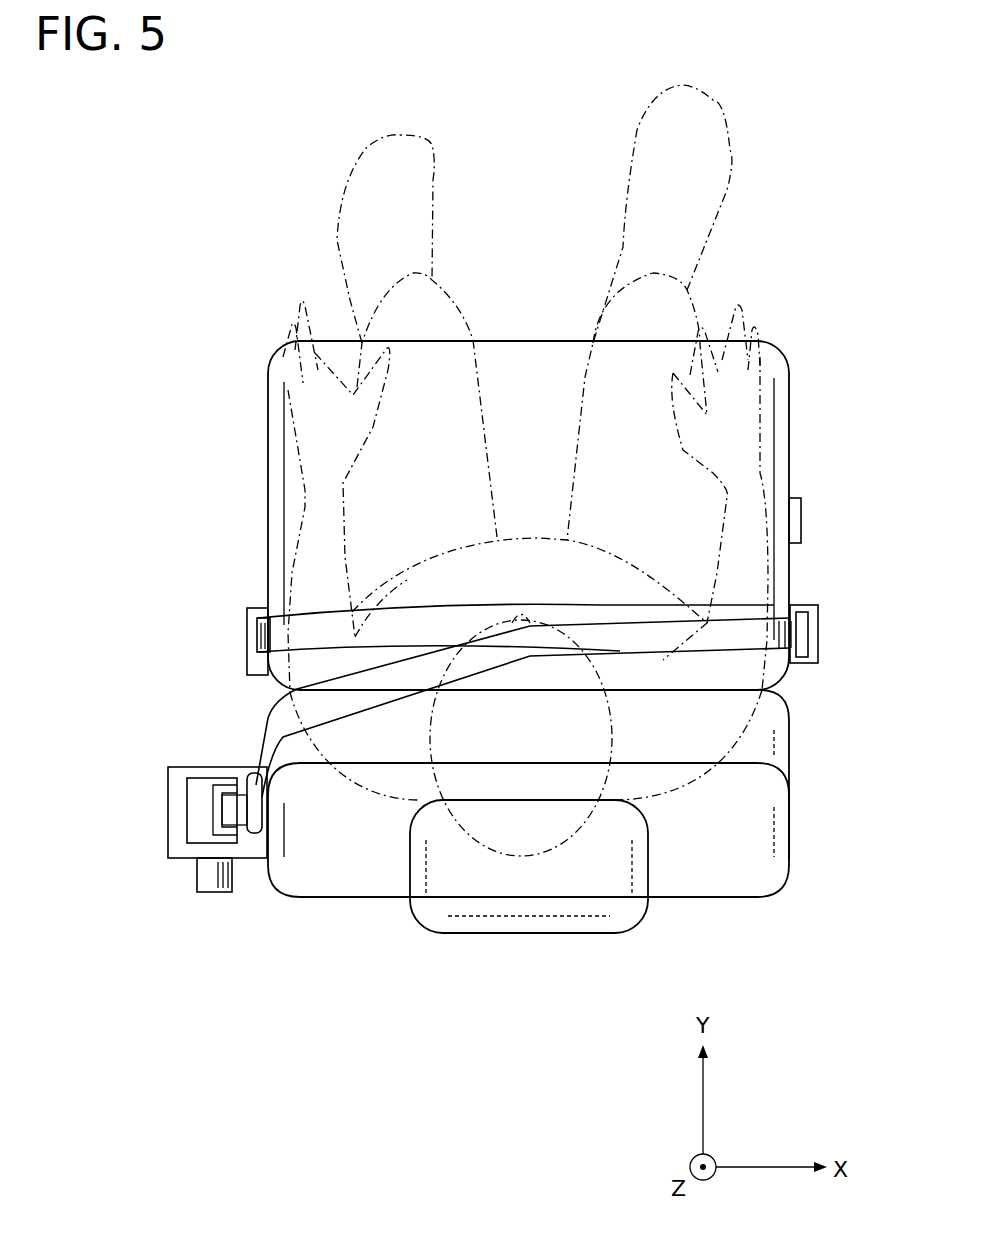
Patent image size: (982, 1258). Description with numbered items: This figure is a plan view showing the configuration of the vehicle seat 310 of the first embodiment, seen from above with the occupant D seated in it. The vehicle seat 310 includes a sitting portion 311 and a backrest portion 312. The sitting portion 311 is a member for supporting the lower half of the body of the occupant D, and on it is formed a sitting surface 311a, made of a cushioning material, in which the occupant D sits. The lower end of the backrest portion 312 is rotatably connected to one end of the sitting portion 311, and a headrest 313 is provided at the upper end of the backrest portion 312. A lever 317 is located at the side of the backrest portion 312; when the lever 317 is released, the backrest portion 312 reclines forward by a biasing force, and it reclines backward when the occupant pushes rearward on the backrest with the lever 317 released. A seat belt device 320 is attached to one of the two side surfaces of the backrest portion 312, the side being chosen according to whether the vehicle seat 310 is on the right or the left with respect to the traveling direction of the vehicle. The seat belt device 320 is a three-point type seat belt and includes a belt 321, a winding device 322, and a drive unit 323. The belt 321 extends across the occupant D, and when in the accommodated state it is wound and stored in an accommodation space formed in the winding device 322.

The vehicle seat 310 is at (398, 931).
The sitting portion 311 is at (268, 482).
The sitting surface 311a is at (529, 353).
The backrest portion 312 is at (725, 890).
The headrest 313 is at (530, 923).
The lever 317 is at (802, 520).
The seat belt device 320 is at (167, 810).
The belt 321 is at (247, 632).
The winding device 322 is at (197, 828).
The drive unit 323 is at (210, 887).
The occupant D is at (730, 150).